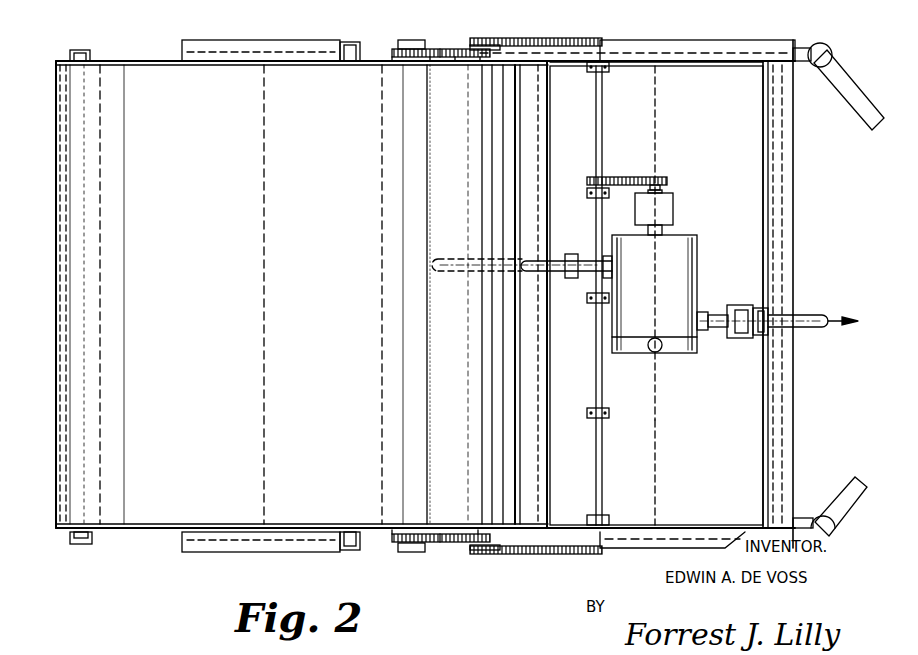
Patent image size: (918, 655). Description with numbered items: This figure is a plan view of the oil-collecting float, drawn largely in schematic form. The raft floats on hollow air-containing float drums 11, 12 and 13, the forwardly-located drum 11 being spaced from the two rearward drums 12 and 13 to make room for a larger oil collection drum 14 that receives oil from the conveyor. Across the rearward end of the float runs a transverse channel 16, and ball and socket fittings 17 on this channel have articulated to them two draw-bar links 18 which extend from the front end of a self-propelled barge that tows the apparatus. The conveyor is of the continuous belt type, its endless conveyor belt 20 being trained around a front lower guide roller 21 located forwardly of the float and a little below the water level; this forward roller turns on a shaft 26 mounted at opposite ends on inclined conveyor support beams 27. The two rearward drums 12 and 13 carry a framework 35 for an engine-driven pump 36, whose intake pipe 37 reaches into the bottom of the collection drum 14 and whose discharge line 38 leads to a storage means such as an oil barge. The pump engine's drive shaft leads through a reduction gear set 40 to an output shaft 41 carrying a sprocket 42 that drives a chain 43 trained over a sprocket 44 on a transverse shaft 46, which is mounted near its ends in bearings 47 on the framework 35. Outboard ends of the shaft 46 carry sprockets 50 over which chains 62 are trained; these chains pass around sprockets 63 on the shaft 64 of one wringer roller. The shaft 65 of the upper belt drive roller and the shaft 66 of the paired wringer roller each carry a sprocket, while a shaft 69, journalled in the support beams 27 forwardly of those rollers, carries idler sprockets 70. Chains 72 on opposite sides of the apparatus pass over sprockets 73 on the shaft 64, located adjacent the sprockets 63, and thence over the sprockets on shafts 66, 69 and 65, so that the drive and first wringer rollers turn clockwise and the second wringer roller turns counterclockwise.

The float drum 11 is at (262, 259).
The float drum 12 is at (661, 121).
The float drum 13 is at (656, 94).
The oil collection drum 14 is at (380, 330).
The transverse channel 16 is at (790, 229).
The ball and socket fittings 17 is at (822, 48).
The draw-bar links 18 is at (852, 85).
The conveyor belt 20 is at (165, 512).
The front guide roller 21 is at (60, 58).
The shaft 26 is at (92, 545).
The conveyor support beams 27 is at (212, 40).
The framework 35 is at (680, 60).
The engine-driven pump 36 is at (694, 238).
The intake pipe 37 is at (552, 262).
The discharge line 38 is at (720, 332).
The reduction gear set 40 is at (673, 214).
The output shaft 41 is at (663, 191).
The sprocket 42 is at (656, 180).
The chain 43 is at (618, 177).
The sprocket 44 is at (592, 187).
The transverse shaft 46 is at (596, 124).
The bearings 47 is at (594, 73).
The sprockets 50 is at (606, 40).
The chains 62 is at (545, 40).
The sprockets 63 is at (480, 45).
The shaft 64 is at (455, 62).
The shaft 65 is at (456, 63).
The shaft 66 is at (436, 63).
The shaft 69 is at (396, 64).
The idler sprockets 70 is at (398, 44).
The chains 72 is at (440, 50).
The sprockets 73 is at (481, 62).